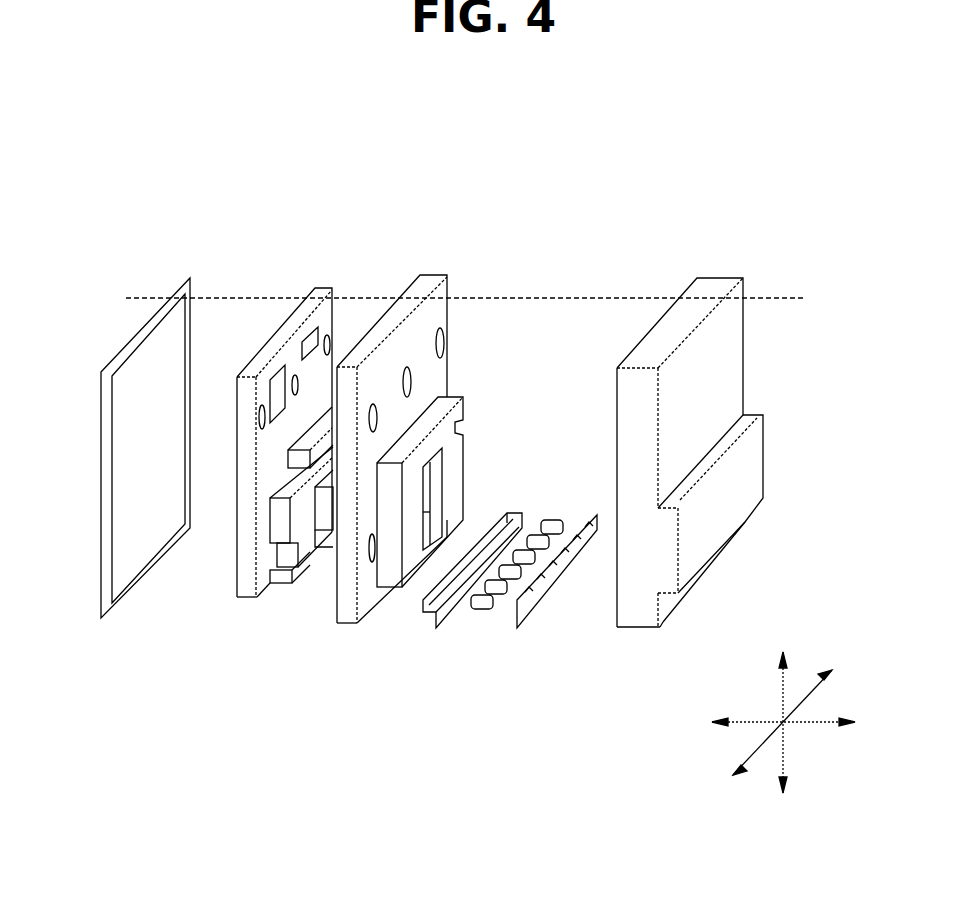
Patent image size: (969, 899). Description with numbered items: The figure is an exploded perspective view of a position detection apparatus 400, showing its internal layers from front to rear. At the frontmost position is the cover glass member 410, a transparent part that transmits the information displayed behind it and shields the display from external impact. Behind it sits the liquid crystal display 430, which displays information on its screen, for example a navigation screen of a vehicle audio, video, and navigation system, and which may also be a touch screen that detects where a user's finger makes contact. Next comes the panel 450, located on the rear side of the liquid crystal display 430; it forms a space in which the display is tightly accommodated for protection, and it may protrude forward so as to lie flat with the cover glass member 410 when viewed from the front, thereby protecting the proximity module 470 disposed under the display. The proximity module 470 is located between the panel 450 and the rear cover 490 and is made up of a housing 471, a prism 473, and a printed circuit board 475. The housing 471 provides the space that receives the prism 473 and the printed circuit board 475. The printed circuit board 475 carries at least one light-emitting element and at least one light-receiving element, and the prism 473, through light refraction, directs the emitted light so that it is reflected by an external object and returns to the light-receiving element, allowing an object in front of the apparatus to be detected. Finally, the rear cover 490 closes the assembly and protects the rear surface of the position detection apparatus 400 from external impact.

The position detection apparatus 400 is at (442, 213).
The cover glass member 410 is at (102, 620).
The liquid crystal display 430 is at (243, 597).
The panel 450 is at (342, 618).
The proximity module 470 is at (506, 623).
The housing 471 is at (433, 637).
The prism 473 is at (482, 610).
The printed circuit board 475 is at (557, 594).
The rear cover 490 is at (757, 478).